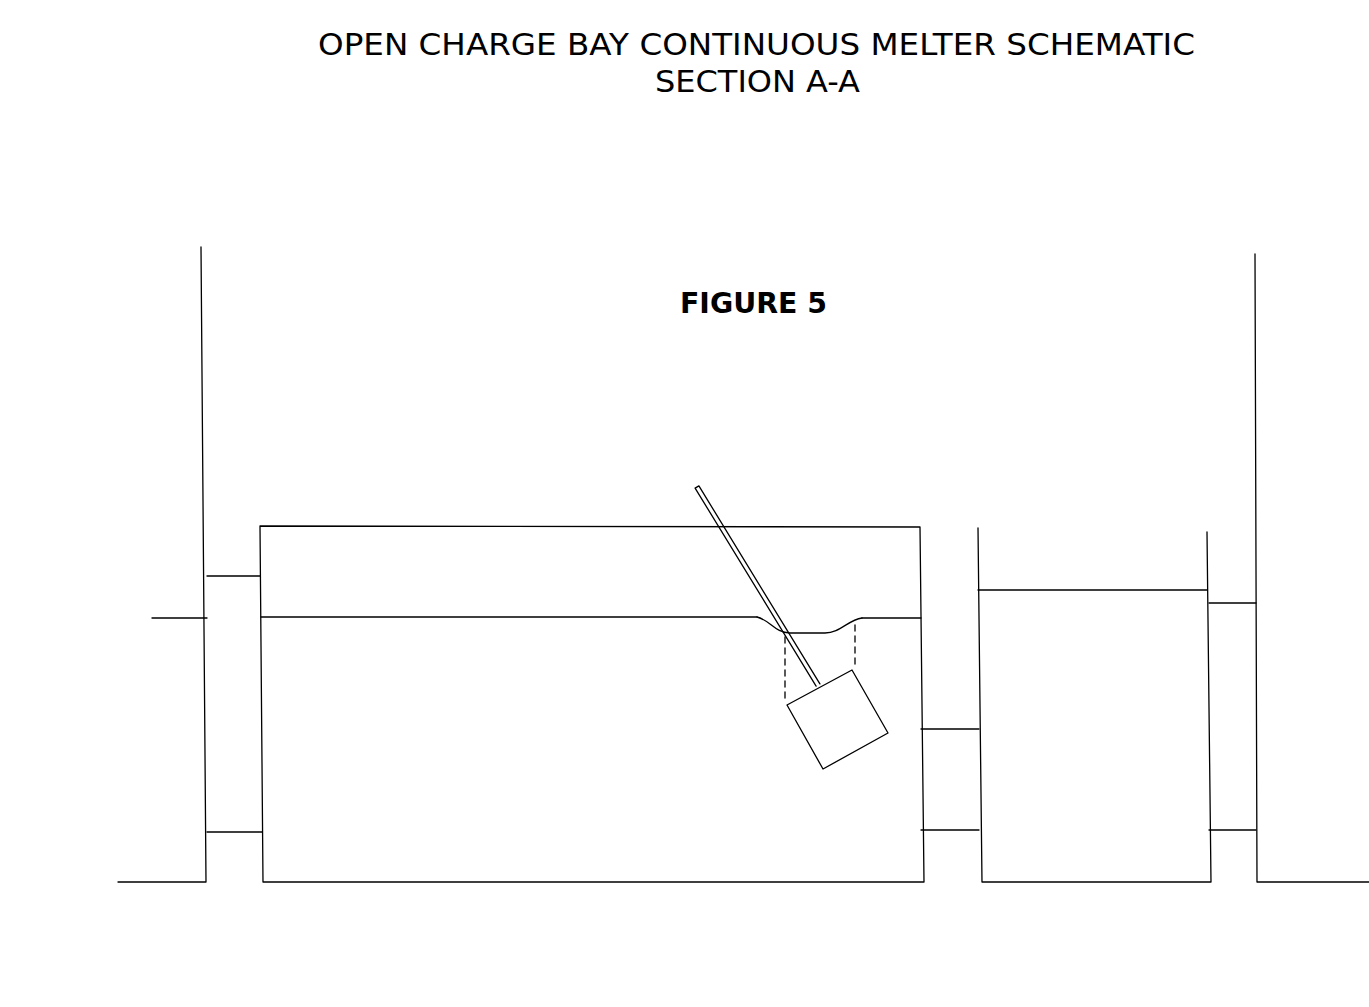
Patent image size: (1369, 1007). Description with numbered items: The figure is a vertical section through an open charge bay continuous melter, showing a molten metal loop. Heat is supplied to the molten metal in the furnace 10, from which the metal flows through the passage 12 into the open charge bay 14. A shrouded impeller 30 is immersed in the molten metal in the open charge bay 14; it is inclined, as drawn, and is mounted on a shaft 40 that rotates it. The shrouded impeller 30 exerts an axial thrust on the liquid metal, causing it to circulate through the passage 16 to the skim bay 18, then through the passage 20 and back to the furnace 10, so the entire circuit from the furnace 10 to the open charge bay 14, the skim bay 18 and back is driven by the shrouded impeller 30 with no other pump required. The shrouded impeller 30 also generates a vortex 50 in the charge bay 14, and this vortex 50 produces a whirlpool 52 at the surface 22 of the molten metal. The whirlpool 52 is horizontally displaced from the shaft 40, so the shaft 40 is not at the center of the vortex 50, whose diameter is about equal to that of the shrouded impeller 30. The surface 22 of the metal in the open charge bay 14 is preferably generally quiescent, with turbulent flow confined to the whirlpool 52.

The furnace 10 is at (170, 350).
The passage 12 is at (245, 705).
The open charge bay 14 is at (580, 809).
The passage 16 is at (965, 797).
The skim bay 18 is at (1120, 745).
The passage 20 is at (1245, 733).
The surface of molten metal 22 is at (464, 617).
The shrouded impeller 30 is at (823, 732).
The shaft 40 is at (762, 583).
The vortex 50 is at (798, 672).
The whirlpool 52 is at (818, 632).